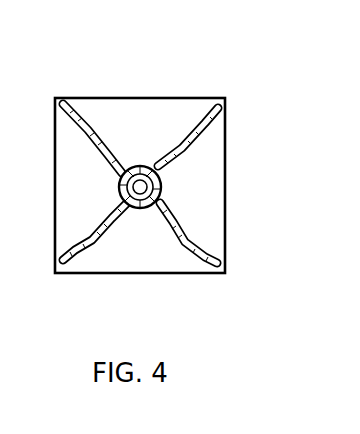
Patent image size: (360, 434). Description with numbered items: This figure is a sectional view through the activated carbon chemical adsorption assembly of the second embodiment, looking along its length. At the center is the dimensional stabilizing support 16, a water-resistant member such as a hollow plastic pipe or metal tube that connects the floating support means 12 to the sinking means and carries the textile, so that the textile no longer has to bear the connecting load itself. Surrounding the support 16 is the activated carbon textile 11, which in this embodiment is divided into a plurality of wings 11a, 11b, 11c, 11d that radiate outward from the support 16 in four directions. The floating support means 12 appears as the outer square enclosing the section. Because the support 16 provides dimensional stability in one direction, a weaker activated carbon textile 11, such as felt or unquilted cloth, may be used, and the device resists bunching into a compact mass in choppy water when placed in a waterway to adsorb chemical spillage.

The activated carbon textile 11 is at (154, 170).
The wing 11a is at (96, 242).
The wing 11b is at (93, 130).
The wing 11c is at (182, 142).
The wing 11d is at (180, 235).
The floating support means 12 is at (137, 113).
The dimensional stabilizing support 16 is at (142, 205).